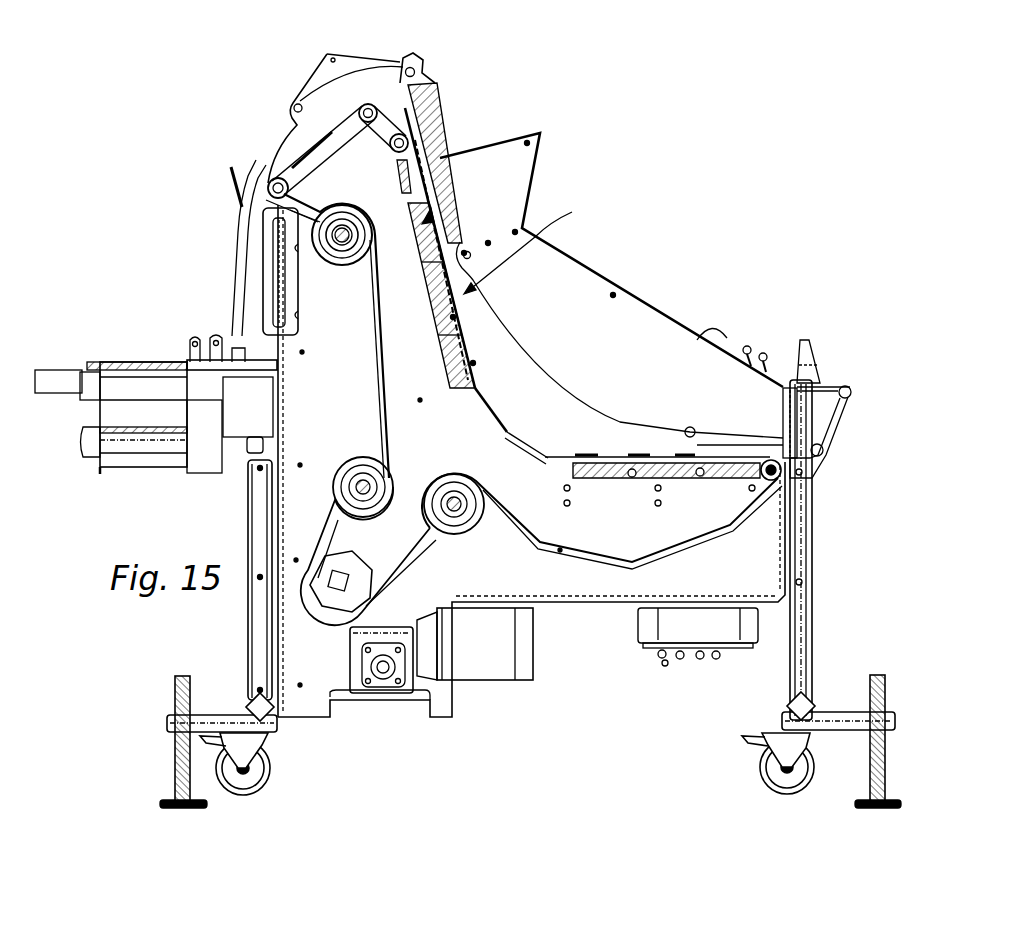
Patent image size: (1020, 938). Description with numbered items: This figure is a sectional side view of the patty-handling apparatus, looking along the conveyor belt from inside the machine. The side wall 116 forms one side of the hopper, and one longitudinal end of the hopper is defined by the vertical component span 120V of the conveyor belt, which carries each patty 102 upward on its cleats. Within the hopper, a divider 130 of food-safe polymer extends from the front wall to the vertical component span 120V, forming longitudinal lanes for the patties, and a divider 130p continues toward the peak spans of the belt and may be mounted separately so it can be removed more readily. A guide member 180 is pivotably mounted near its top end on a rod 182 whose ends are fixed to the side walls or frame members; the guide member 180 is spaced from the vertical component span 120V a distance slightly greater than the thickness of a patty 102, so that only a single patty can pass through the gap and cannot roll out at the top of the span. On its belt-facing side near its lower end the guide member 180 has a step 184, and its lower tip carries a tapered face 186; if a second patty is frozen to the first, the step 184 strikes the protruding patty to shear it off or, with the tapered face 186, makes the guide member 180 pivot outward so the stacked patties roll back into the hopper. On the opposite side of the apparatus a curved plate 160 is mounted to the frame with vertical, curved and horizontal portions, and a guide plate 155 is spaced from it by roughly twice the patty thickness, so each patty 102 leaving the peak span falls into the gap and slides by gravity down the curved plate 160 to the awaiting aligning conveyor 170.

The patty 102 is at (362, 104).
The side wall 116 is at (640, 357).
The vertical component span 120V is at (548, 246).
The divider 130 is at (570, 422).
The divider 130p is at (396, 92).
The guide plate 155 is at (232, 200).
The curved plate 160 is at (233, 360).
The aligning conveyor 170 is at (127, 326).
The guide member 180 is at (428, 110).
The rod 182 is at (412, 66).
The step 184 is at (336, 234).
The tapered face 186 is at (350, 258).